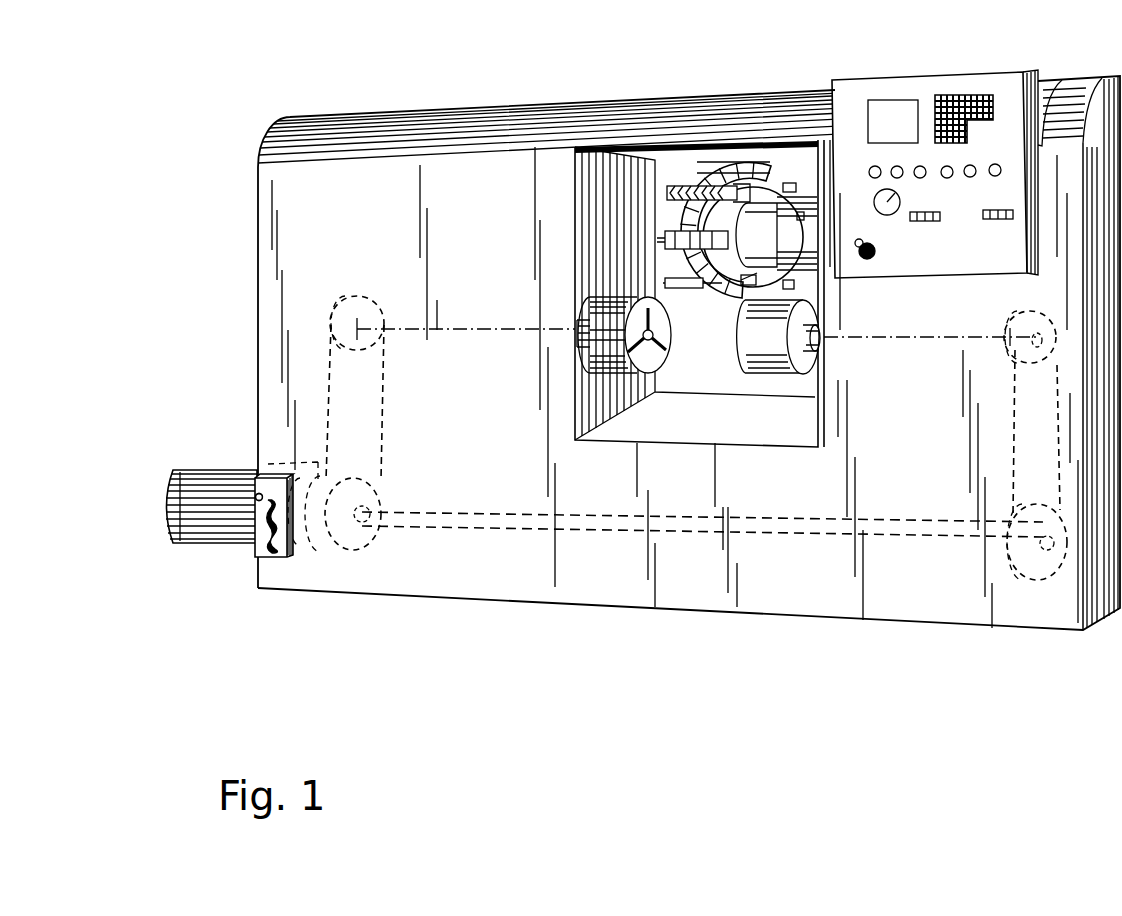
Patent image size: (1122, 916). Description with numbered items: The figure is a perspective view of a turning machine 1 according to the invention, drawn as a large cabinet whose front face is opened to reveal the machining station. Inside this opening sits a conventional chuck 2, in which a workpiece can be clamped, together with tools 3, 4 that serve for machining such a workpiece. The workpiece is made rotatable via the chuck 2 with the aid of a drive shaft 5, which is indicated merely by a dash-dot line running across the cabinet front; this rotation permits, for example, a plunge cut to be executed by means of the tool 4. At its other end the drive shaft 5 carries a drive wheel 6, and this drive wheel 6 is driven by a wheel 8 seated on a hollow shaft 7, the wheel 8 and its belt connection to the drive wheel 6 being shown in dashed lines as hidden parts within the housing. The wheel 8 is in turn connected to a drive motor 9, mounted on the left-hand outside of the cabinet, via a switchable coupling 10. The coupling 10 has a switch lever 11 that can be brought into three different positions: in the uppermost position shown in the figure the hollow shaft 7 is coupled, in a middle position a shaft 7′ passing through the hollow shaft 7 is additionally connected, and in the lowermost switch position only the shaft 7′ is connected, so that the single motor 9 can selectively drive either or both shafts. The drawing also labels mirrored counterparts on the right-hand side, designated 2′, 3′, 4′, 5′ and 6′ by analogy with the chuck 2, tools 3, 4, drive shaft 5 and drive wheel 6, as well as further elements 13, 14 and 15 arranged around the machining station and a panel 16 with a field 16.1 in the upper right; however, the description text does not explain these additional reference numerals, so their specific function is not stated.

The turning machine 1 is at (243, 114).
The chuck 2 is at (624, 394).
The second spindle drive 2' is at (778, 395).
The tool 3 is at (692, 304).
The tool 3' is at (740, 315).
The tool 4 is at (700, 200).
The tool 4' is at (692, 294).
The drive shaft 5 is at (466, 351).
The axis of second drive 5' is at (932, 358).
The drive wheel 6 is at (355, 363).
The belt pulley 6' is at (1035, 445).
The hollow shaft 7 is at (293, 551).
The shaft 7' is at (702, 589).
The wheel 8 is at (361, 551).
The drive motor 9 is at (194, 546).
The switchable coupling 10 is at (291, 562).
The switch lever 11 is at (257, 485).
The tool turret 13 is at (753, 190).
The tool magazine 14 is at (695, 208).
The clamping device 15 is at (763, 220).
The control panel 16 is at (935, 173).
The keypad 16.1 is at (975, 93).